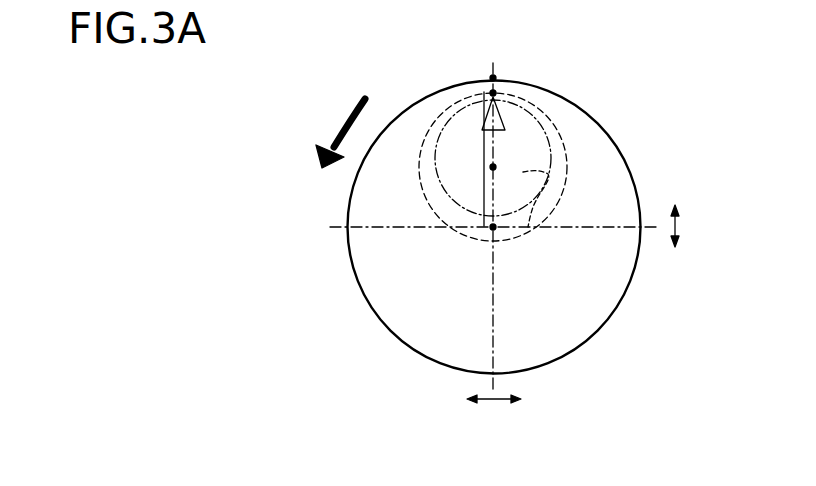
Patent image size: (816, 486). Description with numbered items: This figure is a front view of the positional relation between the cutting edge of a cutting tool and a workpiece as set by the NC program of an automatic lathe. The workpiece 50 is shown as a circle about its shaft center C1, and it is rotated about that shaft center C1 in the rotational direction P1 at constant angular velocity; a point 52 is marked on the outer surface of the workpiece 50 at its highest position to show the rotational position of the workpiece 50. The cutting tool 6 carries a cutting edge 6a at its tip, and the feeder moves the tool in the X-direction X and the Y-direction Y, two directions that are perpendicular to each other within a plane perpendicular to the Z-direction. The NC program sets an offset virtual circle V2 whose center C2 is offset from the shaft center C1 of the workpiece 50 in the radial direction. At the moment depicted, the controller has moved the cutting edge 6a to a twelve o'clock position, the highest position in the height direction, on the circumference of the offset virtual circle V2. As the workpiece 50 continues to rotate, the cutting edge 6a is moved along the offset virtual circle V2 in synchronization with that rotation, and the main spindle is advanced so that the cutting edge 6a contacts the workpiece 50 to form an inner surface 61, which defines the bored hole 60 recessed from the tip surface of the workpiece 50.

The workpiece 50 is at (636, 179).
The point on the outer surface of the workpiece 52 is at (494, 78).
The cutting tool 6 is at (503, 122).
The cutting edge 6a is at (493, 93).
The hole 60 is at (518, 138).
The inner surface 61 is at (523, 172).
The offset virtual circle V2 is at (568, 137).
The shaft center C1 is at (491, 228).
The center of the offset virtual circle C2 is at (490, 167).
The rotational direction P1 is at (343, 128).
The X-direction X is at (494, 401).
The Y-direction Y is at (678, 226).